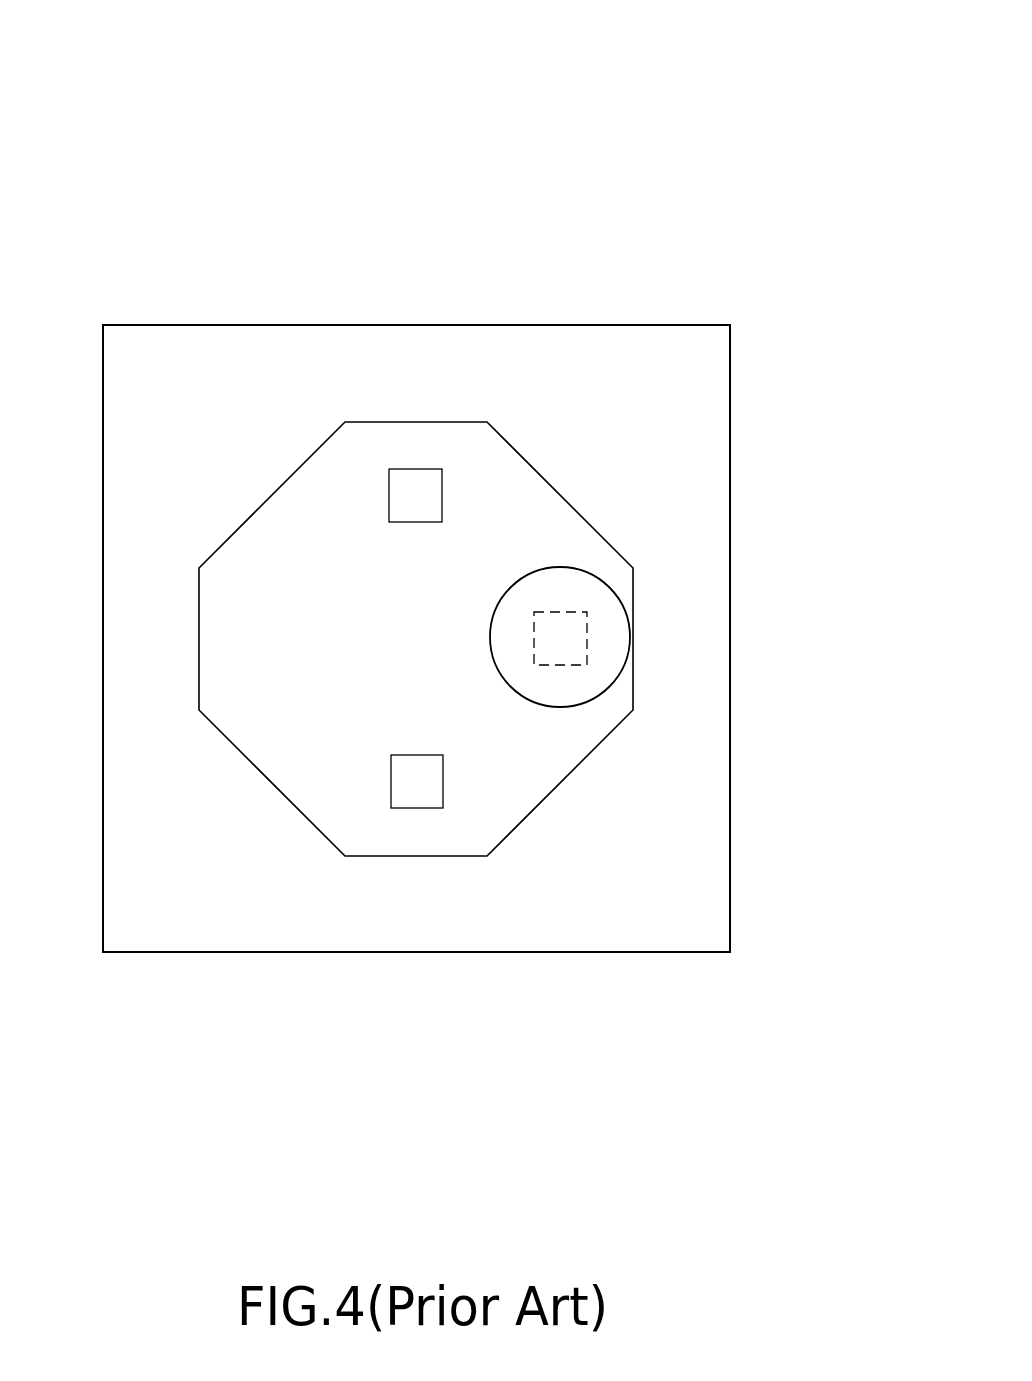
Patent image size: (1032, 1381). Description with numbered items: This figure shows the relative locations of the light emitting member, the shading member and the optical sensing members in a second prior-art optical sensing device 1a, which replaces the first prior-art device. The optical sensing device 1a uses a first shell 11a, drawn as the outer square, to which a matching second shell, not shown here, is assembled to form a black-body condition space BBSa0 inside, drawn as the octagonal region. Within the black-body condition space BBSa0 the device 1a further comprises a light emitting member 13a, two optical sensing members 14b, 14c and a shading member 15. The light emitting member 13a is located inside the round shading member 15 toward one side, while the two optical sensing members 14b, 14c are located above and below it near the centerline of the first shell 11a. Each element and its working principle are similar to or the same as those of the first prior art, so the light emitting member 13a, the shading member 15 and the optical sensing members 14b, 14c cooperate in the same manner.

The optical sensing device 1a is at (735, 124).
The first shell 11a is at (708, 553).
The black-body condition space BBSa0 is at (505, 462).
The shading member 15 is at (600, 602).
The light emitting member 13a is at (555, 643).
The optical sensing member 14b is at (408, 498).
The optical sensing member 14c is at (414, 783).